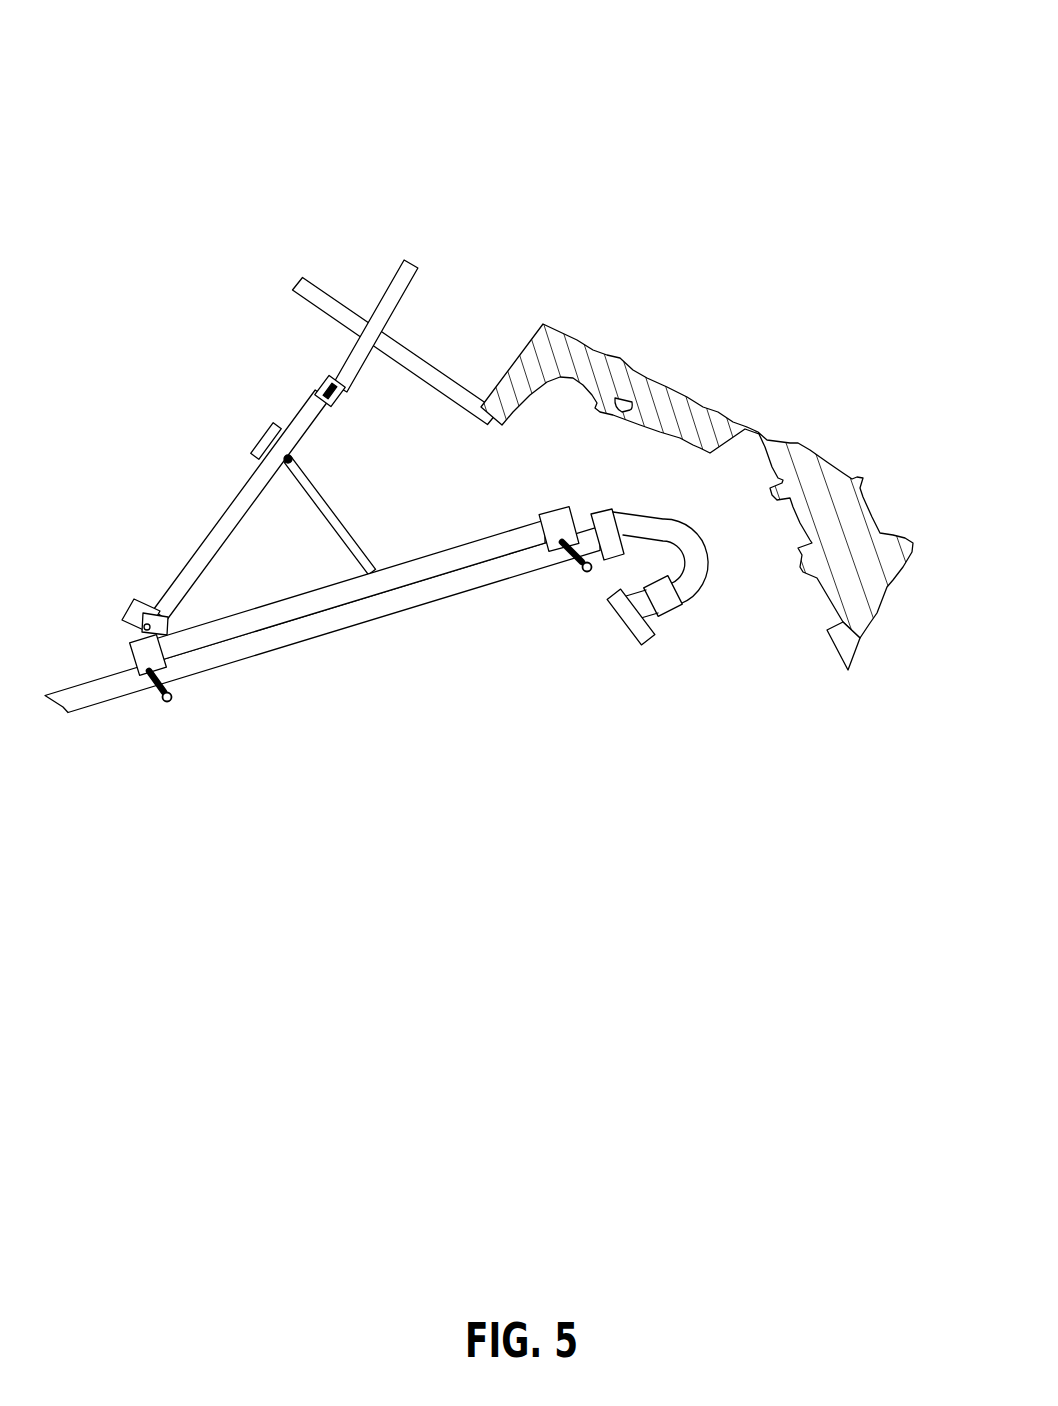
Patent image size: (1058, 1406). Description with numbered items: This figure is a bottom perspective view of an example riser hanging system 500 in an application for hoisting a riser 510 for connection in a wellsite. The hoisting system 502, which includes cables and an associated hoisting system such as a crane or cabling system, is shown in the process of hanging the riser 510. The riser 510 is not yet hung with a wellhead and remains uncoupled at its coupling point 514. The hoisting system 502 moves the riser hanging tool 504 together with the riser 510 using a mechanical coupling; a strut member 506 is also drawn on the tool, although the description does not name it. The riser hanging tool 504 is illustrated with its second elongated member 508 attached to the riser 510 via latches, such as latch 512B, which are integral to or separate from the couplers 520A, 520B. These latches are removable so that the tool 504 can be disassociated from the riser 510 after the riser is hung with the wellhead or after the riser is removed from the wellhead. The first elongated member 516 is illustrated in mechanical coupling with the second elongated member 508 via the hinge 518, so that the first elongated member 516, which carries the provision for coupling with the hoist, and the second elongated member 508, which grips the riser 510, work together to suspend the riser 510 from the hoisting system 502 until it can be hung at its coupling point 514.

The riser hanging system 500 is at (903, 110).
The hoisting system 502 is at (387, 290).
The riser hanging tool 504 is at (225, 497).
The support strut 506 is at (347, 517).
The second elongated member 508 is at (310, 607).
The riser 510 is at (405, 610).
The latch 512B is at (575, 572).
The coupling point 514 is at (627, 638).
The first elongated member 516 is at (297, 400).
The hinge 518 is at (140, 598).
The coupler 520A is at (543, 533).
The coupler 520B is at (127, 670).